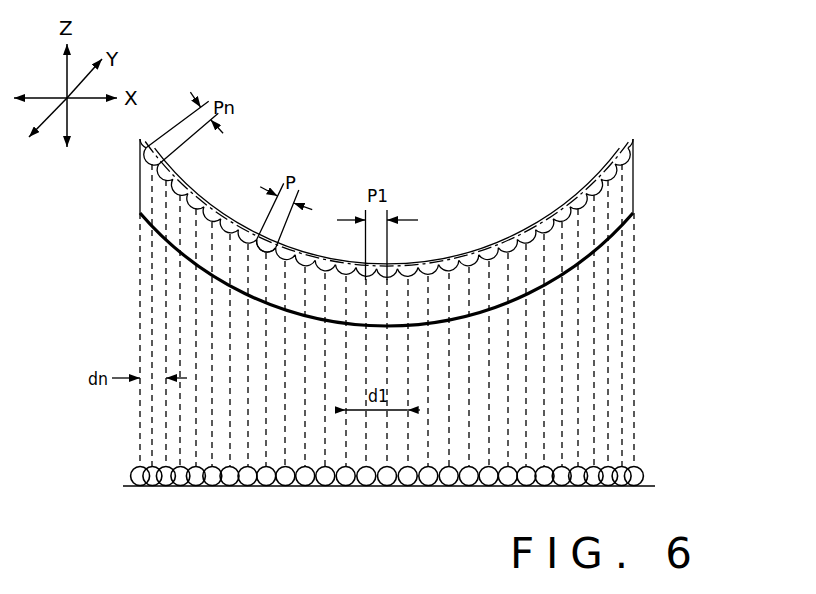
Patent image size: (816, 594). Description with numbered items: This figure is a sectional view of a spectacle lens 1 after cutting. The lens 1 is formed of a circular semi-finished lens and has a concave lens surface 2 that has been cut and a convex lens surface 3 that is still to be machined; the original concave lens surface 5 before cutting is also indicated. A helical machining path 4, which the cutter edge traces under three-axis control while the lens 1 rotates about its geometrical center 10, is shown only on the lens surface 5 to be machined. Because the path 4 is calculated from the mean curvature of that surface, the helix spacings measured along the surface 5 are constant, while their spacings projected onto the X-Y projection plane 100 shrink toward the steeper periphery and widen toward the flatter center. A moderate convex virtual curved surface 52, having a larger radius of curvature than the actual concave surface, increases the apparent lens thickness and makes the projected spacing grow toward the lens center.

The spectacle lens 1 is at (524, 122).
The concave lens surface 2 is at (291, 255).
The convex lens surface 3 is at (492, 307).
The helical machining path 4 is at (267, 246).
The concave lens surface before cutting 5 is at (213, 207).
The geometrical center 10 is at (389, 279).
The virtual curved surface 52 is at (530, 214).
The X-Y projection plane 100 is at (651, 487).